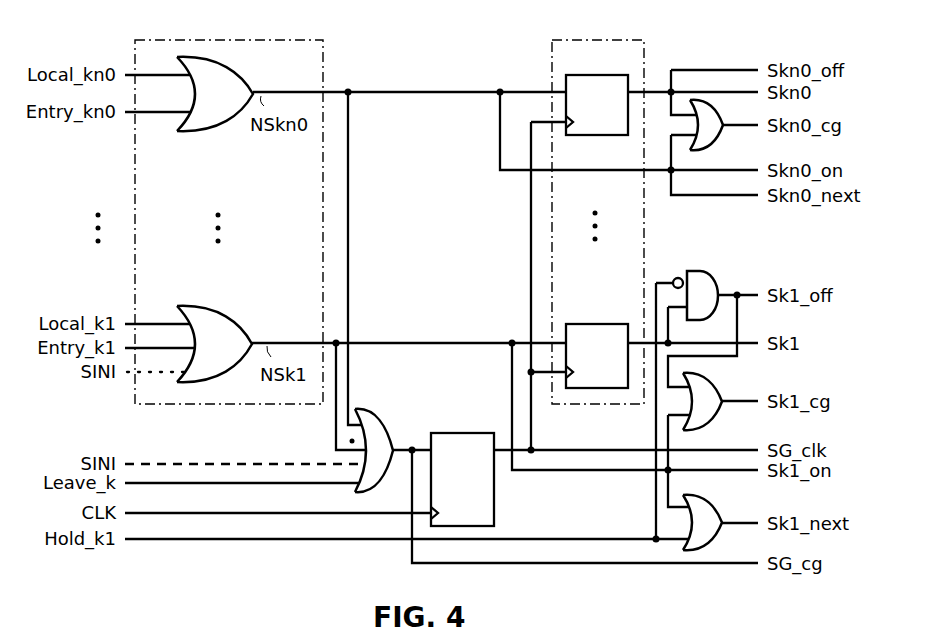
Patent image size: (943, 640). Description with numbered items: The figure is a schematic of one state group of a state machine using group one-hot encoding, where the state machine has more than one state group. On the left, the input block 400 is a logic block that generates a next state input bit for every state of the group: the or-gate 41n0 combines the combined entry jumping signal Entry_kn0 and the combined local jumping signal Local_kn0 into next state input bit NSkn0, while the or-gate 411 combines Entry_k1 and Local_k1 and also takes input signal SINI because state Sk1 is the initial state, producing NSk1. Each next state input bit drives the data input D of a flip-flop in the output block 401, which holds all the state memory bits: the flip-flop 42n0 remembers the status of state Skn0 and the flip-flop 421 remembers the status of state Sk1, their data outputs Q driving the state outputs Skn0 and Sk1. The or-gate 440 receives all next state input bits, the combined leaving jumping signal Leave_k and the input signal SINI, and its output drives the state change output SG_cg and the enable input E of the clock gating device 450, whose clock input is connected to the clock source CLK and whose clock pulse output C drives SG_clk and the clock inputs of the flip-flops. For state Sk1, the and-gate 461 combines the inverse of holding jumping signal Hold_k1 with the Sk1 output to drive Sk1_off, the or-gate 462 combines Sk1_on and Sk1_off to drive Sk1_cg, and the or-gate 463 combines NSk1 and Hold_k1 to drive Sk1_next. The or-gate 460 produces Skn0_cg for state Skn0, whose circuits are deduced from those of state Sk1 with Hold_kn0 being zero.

The input block 400 is at (218, 40).
The output block 401 is at (600, 40).
The or-gate 41n0 is at (229, 63).
The or-gate 411 is at (231, 314).
The flip-flop 42n0 is at (569, 74).
The flip-flop 421 is at (580, 323).
The or-gate 440 is at (389, 433).
The clock gating device 450 is at (447, 432).
The or-gate 460 is at (720, 137).
The and-gate 461 is at (705, 271).
The or-gate 462 is at (710, 379).
The or-gate 463 is at (708, 500).